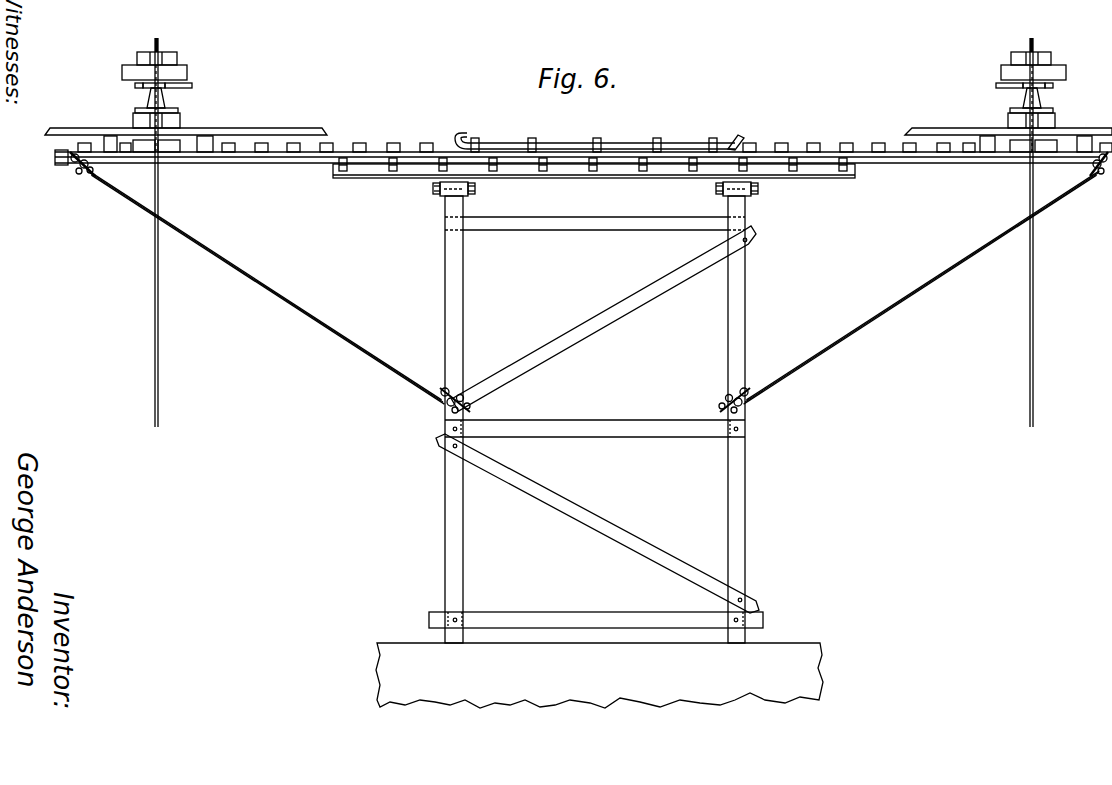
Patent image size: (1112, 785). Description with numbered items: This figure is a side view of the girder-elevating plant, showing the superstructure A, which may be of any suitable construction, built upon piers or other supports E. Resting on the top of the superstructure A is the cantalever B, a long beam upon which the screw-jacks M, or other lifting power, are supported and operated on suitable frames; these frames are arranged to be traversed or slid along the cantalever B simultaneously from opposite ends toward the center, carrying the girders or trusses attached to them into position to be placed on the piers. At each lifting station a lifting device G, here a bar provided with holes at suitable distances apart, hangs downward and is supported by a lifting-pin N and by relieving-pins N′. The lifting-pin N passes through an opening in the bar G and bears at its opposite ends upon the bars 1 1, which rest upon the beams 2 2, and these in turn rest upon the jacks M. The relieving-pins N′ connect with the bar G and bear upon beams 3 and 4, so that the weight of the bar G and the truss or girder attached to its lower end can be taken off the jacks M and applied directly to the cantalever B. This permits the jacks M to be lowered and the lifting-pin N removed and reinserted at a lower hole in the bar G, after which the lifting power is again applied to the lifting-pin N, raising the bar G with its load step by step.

The superstructure A is at (733, 312).
The cantalever B is at (57, 155).
The piers E is at (599, 675).
The lifting device G is at (160, 44).
The screw-jacks M is at (166, 100).
The lifting-pin N is at (178, 56).
The relieving-pin N′ is at (181, 114).
The beams or bars 1 is at (593, 58).
The beams 2 is at (594, 72).
The beam 3 is at (592, 120).
The beam 4 is at (595, 146).